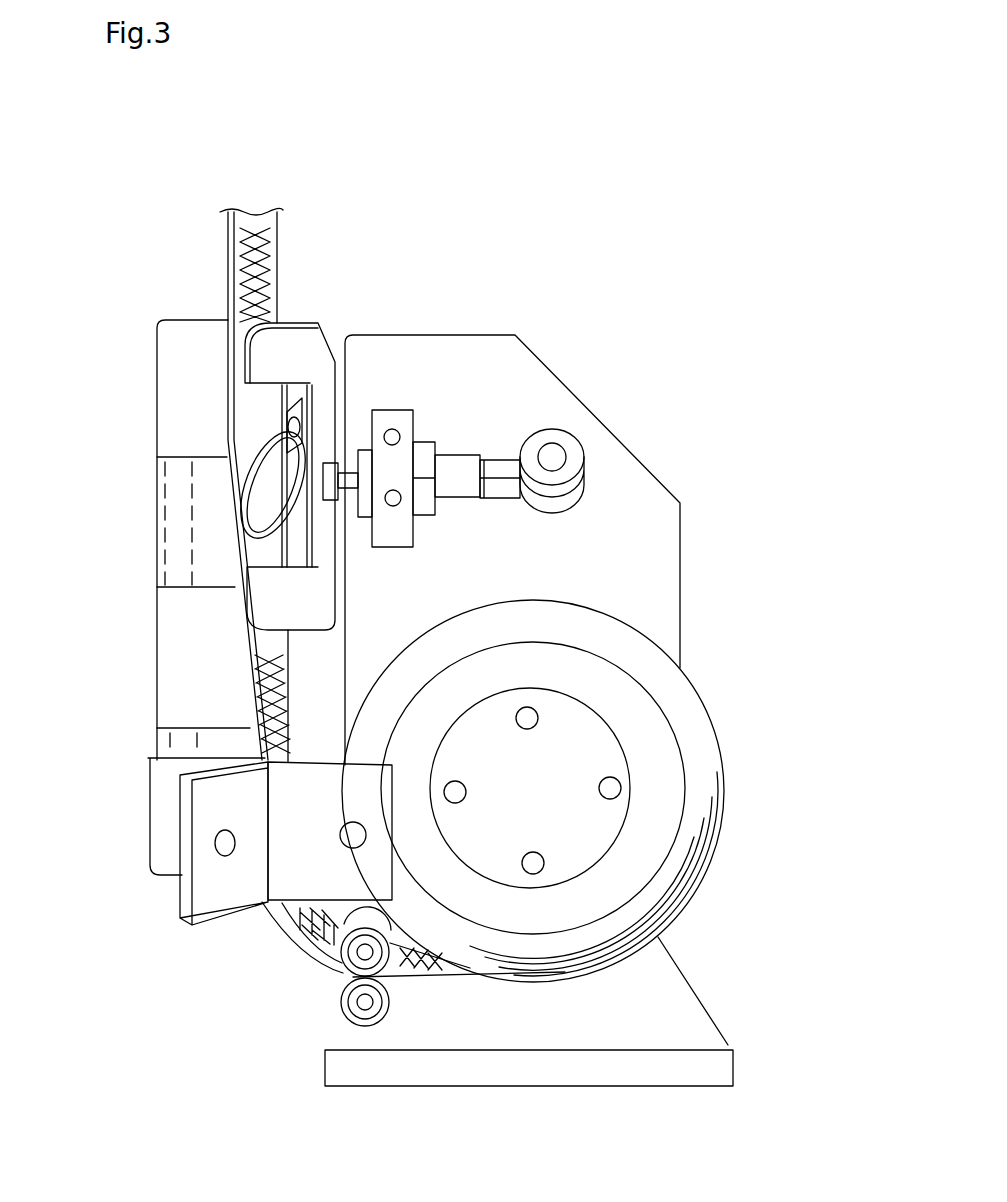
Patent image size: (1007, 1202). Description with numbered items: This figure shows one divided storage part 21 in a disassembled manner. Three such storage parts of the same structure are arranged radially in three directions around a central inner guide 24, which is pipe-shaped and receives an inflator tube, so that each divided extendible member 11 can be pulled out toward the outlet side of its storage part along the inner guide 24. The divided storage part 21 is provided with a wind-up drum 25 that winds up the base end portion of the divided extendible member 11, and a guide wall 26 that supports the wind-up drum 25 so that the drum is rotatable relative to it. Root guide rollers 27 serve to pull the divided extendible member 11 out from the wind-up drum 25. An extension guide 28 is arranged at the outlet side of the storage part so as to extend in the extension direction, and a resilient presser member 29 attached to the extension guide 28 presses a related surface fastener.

The divided extendible member 11 is at (728, 795).
The divided storage part 21 is at (725, 525).
The inner guide 24 is at (177, 543).
The wind-up drum 25 is at (643, 837).
The guide wall 26 is at (628, 477).
The root guide rollers 27 is at (343, 1013).
The extension guide 28 is at (308, 340).
The resilient presser member 29 is at (242, 497).